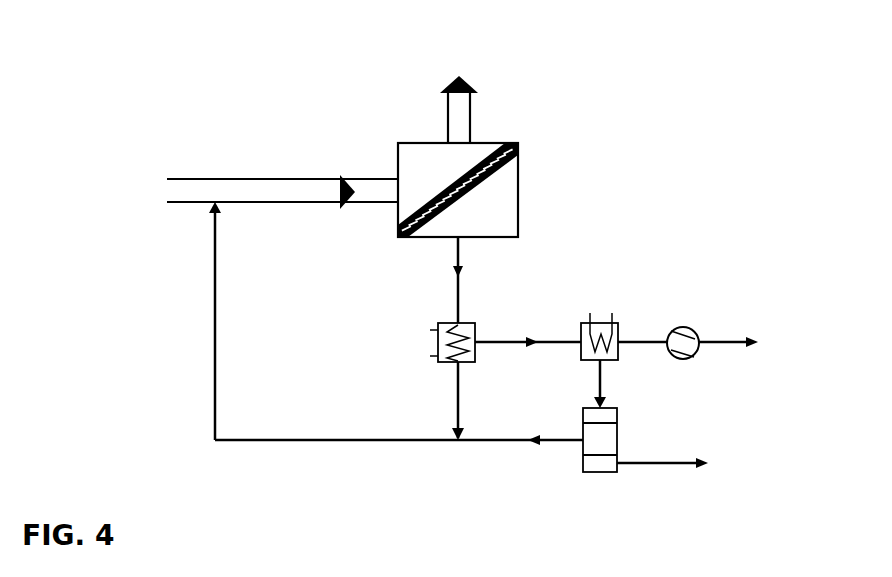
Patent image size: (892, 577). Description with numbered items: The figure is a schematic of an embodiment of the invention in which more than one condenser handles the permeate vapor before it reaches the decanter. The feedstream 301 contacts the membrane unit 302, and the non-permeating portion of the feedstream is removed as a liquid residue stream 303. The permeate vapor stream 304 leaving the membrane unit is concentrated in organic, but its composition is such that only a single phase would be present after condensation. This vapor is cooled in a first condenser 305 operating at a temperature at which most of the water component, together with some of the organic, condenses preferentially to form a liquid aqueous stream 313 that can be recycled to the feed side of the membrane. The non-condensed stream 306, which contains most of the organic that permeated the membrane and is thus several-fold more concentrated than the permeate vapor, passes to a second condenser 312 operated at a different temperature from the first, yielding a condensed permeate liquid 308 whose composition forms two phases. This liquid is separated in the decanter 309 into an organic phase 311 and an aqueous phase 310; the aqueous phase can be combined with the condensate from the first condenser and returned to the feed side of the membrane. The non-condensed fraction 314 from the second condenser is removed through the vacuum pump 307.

The feedstream 301 is at (282, 181).
The membrane unit 302 is at (458, 190).
The liquid residue stream 303 is at (460, 97).
The permeate vapor stream 304 is at (434, 280).
The condenser 305 is at (435, 342).
The non-condensed stream 306 is at (528, 328).
The vacuum pump 307 is at (661, 329).
The condensed permeate liquid 308 is at (621, 384).
The decanter 309 is at (601, 453).
The aqueous phase 310 is at (399, 426).
The organic phase 311 is at (686, 464).
The second condenser 312 is at (601, 326).
The liquid aqueous stream 313 is at (194, 321).
The non-condensed fraction 314 is at (753, 342).